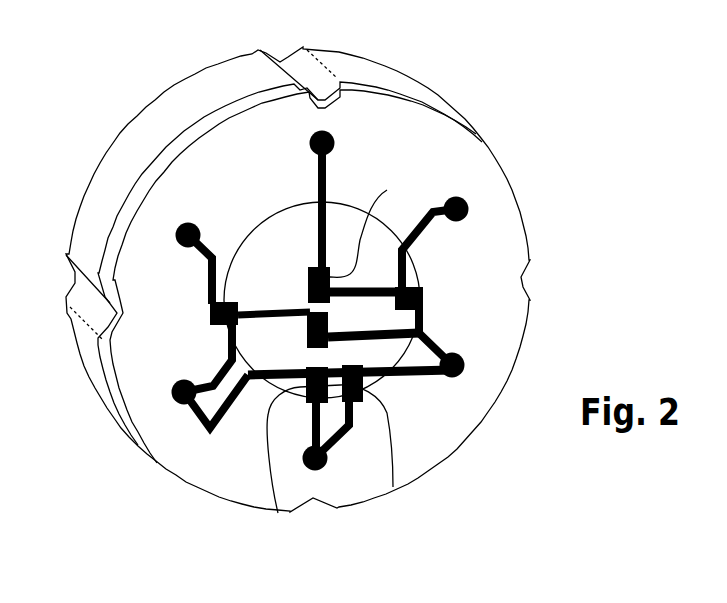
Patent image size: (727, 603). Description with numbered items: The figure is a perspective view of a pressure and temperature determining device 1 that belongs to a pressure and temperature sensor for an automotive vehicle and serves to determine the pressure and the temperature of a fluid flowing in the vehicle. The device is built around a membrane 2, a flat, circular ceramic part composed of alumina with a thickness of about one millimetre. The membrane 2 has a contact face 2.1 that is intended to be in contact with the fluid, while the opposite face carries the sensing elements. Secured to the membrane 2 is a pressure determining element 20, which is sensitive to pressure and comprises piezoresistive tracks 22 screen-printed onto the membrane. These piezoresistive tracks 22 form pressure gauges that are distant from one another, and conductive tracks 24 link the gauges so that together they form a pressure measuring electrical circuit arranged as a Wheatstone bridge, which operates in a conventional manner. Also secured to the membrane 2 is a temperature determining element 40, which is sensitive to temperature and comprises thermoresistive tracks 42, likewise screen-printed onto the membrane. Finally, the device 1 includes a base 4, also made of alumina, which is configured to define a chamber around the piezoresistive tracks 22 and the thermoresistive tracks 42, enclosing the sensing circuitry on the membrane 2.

The pressure and temperature determining device 1 is at (297, 256).
The membrane 2 is at (173, 153).
The contact face 2.1 is at (392, 141).
The base 4 is at (118, 168).
The pressure determining element 20 is at (317, 278).
The piezoresistive tracks 22 is at (308, 334).
The conductive tracks 24 is at (318, 178).
The temperature determining element 40 is at (247, 477).
The thermoresistive tracks 42 is at (278, 513).